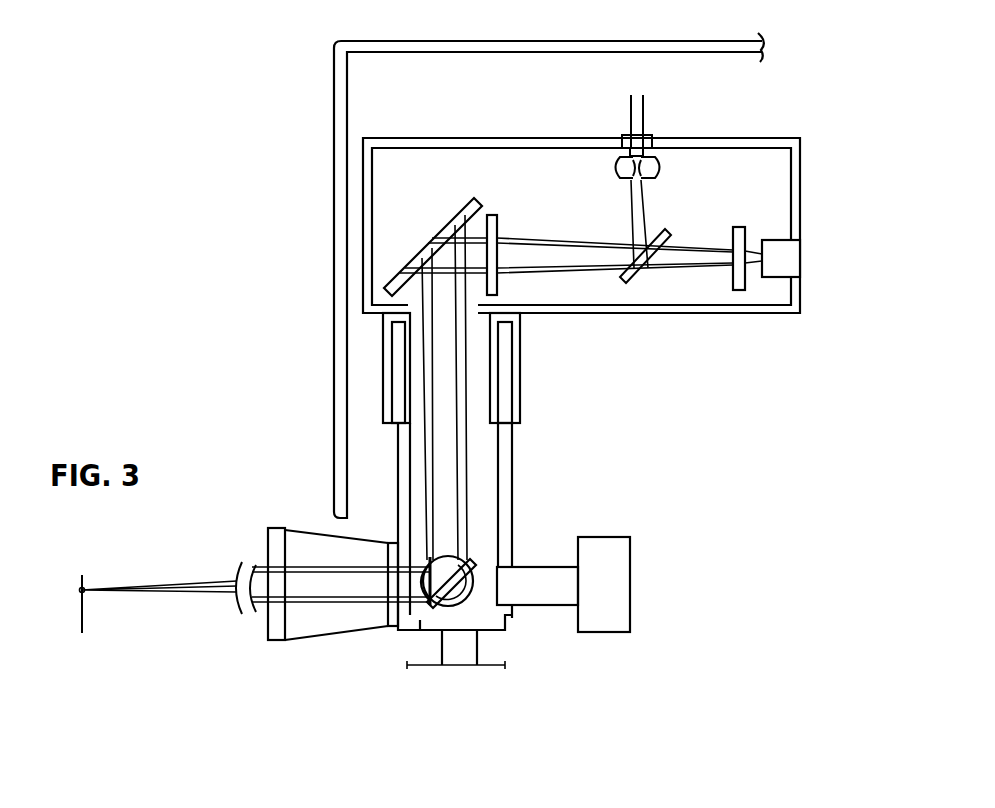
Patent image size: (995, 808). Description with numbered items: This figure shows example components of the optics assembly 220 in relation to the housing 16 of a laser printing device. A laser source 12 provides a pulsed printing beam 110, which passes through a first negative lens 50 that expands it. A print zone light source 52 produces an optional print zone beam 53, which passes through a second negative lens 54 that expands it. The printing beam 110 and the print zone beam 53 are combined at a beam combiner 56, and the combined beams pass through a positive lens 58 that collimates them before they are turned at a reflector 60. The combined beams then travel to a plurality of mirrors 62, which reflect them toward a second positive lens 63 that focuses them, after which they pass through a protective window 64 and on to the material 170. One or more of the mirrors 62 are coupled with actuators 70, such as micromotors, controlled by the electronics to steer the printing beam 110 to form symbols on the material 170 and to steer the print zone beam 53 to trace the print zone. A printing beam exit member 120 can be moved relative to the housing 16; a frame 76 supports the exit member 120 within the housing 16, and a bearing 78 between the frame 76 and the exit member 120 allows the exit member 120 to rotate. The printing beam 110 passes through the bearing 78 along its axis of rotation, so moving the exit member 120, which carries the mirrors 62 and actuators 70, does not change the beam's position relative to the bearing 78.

The laser source 12 is at (800, 268).
The housing 16 is at (342, 387).
The first negative lens 50 is at (742, 285).
The print zone light source 52 is at (647, 120).
The print zone beam 53 is at (628, 202).
The second negative lens 54 is at (660, 167).
The beam combiner 56 is at (620, 282).
The positive lens 58 is at (498, 228).
The reflector 60 is at (440, 238).
The mirrors 62 is at (475, 606).
The second positive lens 63 is at (388, 558).
The protective window 64 is at (280, 645).
The actuators 70 is at (553, 566).
The frame 76 is at (614, 313).
The bearing 78 is at (522, 395).
The pulsed printing beam 110 is at (695, 248).
The printing beam exit member 120 is at (516, 493).
The material 170 is at (82, 622).
The optics assembly 220 is at (735, 537).